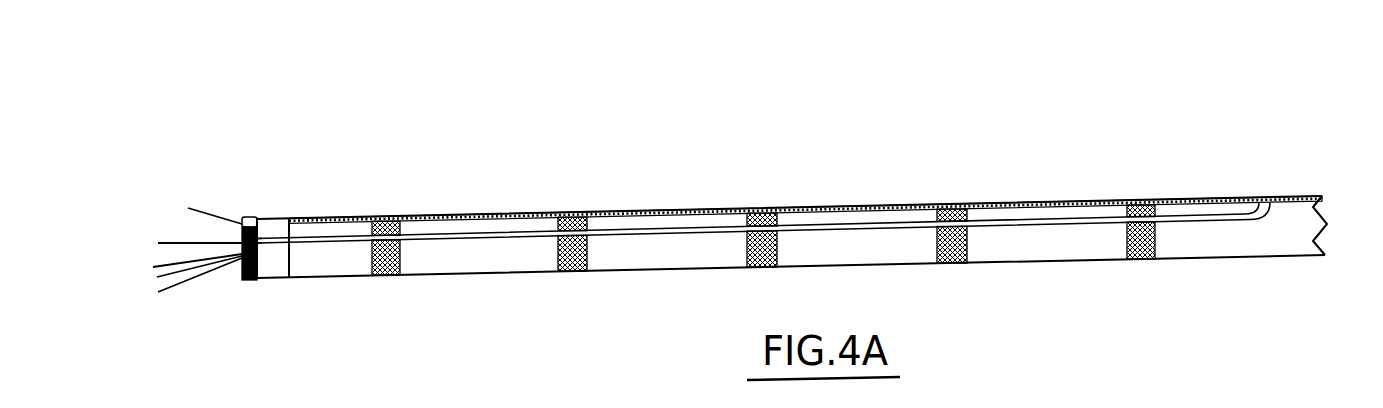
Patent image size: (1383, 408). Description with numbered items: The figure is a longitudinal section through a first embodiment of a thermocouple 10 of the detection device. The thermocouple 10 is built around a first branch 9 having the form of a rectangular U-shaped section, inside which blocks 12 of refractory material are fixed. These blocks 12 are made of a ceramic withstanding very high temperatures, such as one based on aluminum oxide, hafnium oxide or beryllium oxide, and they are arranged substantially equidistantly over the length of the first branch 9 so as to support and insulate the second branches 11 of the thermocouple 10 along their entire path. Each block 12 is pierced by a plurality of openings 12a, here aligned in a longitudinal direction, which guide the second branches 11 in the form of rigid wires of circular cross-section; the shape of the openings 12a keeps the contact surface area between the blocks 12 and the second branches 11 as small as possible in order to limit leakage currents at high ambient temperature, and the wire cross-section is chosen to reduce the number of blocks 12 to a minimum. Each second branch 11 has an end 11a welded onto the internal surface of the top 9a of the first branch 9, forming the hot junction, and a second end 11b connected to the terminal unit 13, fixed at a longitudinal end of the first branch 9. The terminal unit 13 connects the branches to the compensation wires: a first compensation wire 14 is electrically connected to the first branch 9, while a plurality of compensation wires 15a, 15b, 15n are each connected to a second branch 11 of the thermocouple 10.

The first branch 9 is at (1317, 197).
The top of the first branch 9a is at (1028, 202).
The thermocouple 10 is at (808, 178).
The second branches 11 is at (1202, 215).
The end of second branch 11a is at (1265, 204).
The second end of second branch 11b is at (258, 240).
The blocks of refractory material 12 is at (385, 275).
The openings 12a is at (400, 243).
The terminal unit 13 is at (257, 280).
The first compensation wire 14 is at (200, 207).
The compensation wire 15a is at (168, 240).
The compensation wire 15b is at (158, 262).
The compensation wire 15n is at (177, 287).